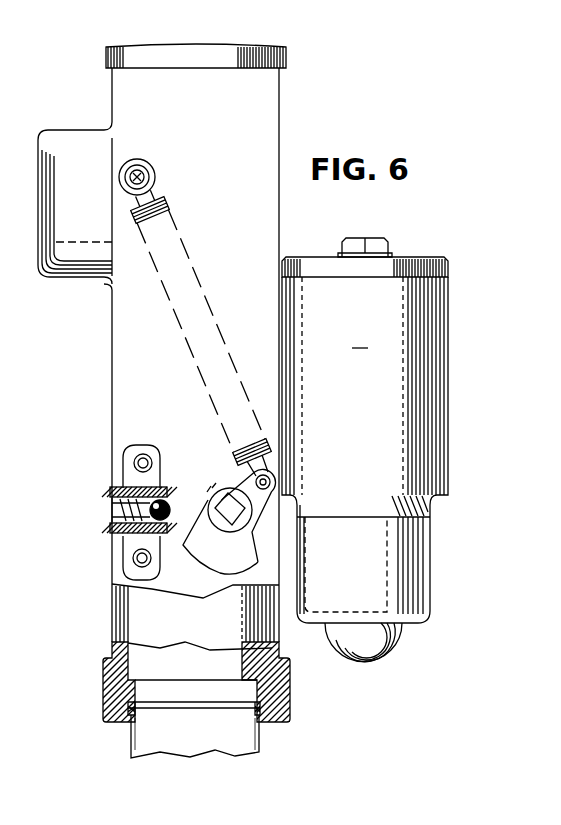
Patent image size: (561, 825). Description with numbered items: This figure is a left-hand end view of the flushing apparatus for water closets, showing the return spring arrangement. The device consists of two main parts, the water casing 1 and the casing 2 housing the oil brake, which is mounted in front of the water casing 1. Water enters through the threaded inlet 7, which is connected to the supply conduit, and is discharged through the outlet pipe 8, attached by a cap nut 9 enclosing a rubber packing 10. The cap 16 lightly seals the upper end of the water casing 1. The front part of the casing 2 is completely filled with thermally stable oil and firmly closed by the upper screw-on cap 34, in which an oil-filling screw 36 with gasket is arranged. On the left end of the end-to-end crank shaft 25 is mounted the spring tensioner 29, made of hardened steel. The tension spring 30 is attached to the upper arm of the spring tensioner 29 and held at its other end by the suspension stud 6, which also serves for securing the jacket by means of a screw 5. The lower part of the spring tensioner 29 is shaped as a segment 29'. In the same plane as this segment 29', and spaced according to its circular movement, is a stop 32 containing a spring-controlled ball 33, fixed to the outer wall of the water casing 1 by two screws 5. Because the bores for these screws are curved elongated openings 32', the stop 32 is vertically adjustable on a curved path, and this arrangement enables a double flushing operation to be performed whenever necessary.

The water casing 1 is at (243, 108).
The casing housing an oil brake 2 is at (365, 469).
The screw 5 is at (140, 463).
The stud 6 is at (128, 170).
The threaded inlet 7 is at (77, 197).
The outlet pipe 8 is at (130, 733).
The cap nut 9 is at (113, 695).
The rubber packing 10 is at (128, 705).
The cap 16 is at (277, 47).
The crank shaft 25 is at (228, 513).
The spring tensioner 29 is at (236, 508).
The segment 29' is at (210, 530).
The tension spring 30 is at (188, 340).
The stop 32 is at (125, 506).
The elongated openings 32' is at (112, 452).
The spring-controlled ball 33 is at (148, 514).
The screw-on cap 34 is at (315, 262).
The oil-filling screw 36 is at (377, 248).